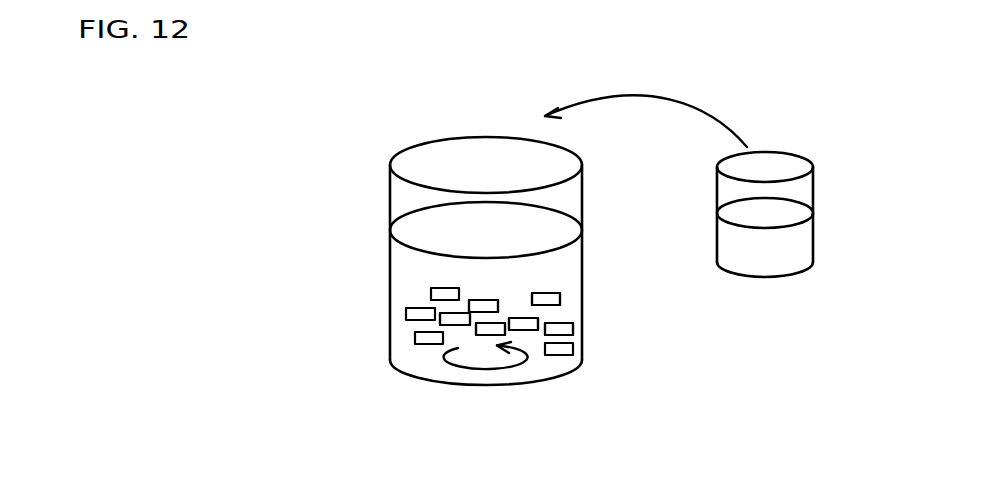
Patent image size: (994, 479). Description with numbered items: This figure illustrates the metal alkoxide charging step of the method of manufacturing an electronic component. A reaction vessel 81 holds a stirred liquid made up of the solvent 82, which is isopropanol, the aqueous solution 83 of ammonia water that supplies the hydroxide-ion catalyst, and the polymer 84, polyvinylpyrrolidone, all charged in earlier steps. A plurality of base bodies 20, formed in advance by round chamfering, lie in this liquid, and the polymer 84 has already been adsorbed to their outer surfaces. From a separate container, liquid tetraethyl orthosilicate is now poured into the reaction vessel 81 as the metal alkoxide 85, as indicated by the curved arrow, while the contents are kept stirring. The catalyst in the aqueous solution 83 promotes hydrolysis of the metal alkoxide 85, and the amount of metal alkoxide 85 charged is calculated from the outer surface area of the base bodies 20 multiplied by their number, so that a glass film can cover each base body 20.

The reaction vessel 81 is at (390, 206).
The base body 20 is at (582, 348).
The solvent 82 is at (401, 329).
The aqueous solution 83 is at (472, 317).
The polymer 84 is at (541, 314).
The metal alkoxide 85 is at (806, 235).